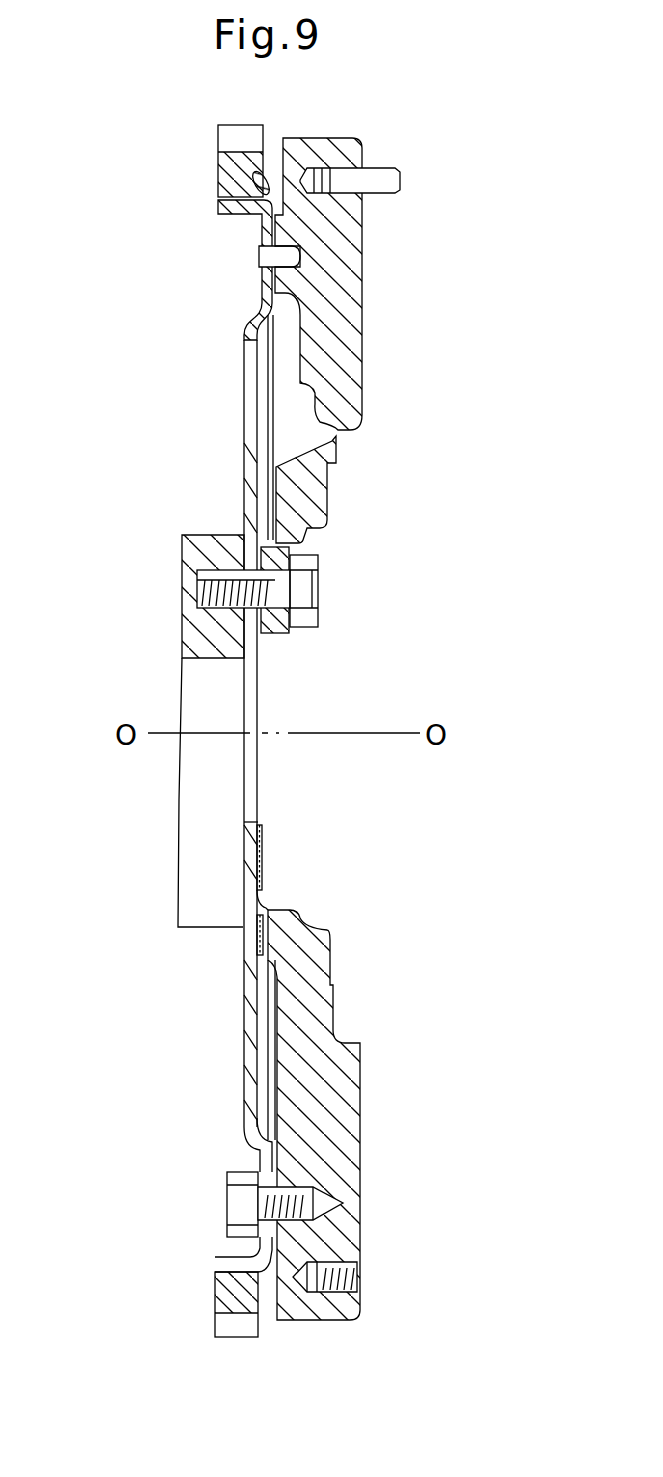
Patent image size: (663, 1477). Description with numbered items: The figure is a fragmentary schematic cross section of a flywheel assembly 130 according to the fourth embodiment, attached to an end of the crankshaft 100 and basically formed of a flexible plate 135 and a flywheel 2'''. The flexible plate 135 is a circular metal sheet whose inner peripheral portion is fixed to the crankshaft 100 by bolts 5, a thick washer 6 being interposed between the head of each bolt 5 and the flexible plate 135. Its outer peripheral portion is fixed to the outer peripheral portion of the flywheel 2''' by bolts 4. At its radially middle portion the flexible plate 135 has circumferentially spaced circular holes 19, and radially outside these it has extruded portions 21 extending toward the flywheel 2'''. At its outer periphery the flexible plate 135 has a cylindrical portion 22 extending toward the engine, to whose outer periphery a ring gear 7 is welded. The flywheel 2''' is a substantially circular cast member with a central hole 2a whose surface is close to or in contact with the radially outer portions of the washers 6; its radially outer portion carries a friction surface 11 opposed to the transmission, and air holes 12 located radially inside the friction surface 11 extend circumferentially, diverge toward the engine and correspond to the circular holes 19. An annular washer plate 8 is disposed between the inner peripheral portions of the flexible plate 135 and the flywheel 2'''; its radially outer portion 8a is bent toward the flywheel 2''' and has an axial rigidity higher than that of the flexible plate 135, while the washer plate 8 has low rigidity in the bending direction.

The ring gear 7 is at (220, 170).
The cylindrical portion 22 is at (218, 208).
The extruded portions 21 is at (262, 257).
The circular holes 19 is at (258, 315).
The flexible plate 135 is at (236, 462).
The flywheel assembly 130 is at (411, 355).
The friction surface 11 is at (362, 241).
The flywheel 2''' is at (382, 284).
The air holes 12 is at (336, 432).
The crankshaft 100 is at (192, 630).
The bolts 5 is at (280, 590).
The washer 6 is at (273, 634).
The washer plate 8 is at (262, 855).
The central hole 2a is at (283, 910).
The radially outer portion 8a is at (270, 948).
The bolts 4 is at (228, 1198).